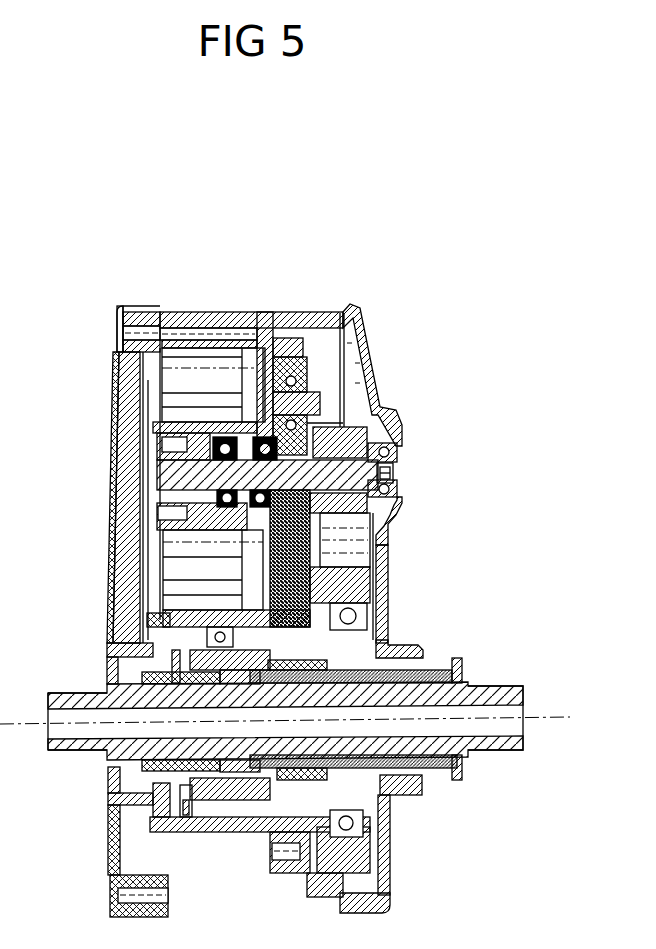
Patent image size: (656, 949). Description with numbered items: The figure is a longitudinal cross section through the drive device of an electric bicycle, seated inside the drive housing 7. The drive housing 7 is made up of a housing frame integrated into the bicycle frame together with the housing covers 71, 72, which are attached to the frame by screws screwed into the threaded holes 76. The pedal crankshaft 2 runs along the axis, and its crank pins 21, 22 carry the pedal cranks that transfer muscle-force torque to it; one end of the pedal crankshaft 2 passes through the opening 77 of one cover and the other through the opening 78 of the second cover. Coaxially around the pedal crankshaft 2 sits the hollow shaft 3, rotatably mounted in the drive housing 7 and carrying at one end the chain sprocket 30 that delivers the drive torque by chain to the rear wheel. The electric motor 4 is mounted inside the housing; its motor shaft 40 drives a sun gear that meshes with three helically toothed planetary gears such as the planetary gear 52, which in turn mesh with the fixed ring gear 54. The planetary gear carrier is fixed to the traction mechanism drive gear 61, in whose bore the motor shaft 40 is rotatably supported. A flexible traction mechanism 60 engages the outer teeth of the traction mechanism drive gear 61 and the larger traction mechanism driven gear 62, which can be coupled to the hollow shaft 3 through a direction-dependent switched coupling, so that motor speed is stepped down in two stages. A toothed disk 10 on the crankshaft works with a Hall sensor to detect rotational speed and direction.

The drive housing 7 is at (108, 300).
The threaded holes 76 is at (115, 328).
The housing cover 71 is at (115, 370).
The electric motor 4 is at (158, 458).
The fixed ring gear 54 is at (283, 337).
The planetary gear 52 is at (308, 358).
The flexible traction mechanism 60 is at (360, 422).
The motor shaft 40 is at (400, 460).
The traction mechanism drive gear 61 is at (400, 513).
The traction mechanism driven gear 62 is at (390, 580).
The opening 78 is at (420, 652).
The chain sprocket 30 is at (463, 673).
The pedal crankshaft 2 is at (125, 697).
The crank pin 22 is at (517, 745).
The crank pin 21 is at (62, 752).
The opening 77 is at (110, 768).
The hollow shaft 3 is at (425, 773).
The toothed disk 10 is at (187, 812).
The housing cover 72 is at (392, 883).